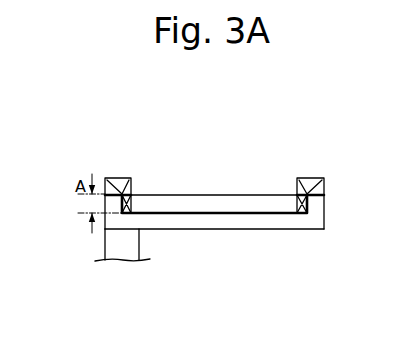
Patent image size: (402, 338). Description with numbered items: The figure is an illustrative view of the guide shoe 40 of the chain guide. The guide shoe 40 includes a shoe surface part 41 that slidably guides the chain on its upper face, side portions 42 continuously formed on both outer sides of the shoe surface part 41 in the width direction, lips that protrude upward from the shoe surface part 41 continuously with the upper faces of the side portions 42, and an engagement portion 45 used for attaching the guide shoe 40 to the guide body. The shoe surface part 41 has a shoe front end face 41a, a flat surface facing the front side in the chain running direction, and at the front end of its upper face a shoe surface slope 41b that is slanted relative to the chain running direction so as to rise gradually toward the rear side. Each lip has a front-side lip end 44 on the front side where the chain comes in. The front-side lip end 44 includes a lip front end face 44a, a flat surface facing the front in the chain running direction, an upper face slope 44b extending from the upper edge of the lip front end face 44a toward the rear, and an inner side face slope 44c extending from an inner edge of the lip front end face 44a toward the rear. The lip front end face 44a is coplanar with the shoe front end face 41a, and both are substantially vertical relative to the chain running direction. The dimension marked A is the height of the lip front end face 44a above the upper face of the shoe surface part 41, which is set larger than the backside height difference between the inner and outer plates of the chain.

The guide shoe 40 is at (66, 140).
The shoe surface part 41 is at (203, 213).
The shoe front end face 41a is at (218, 222).
The shoe surface slope 41b is at (183, 203).
The side portions 42 is at (110, 222).
The front-side lip end 44 is at (132, 178).
The lip front end face 44a is at (105, 178).
The upper face slope 44b is at (125, 178).
The inner side face slope 44c is at (134, 208).
The engagement portion 45 is at (122, 257).